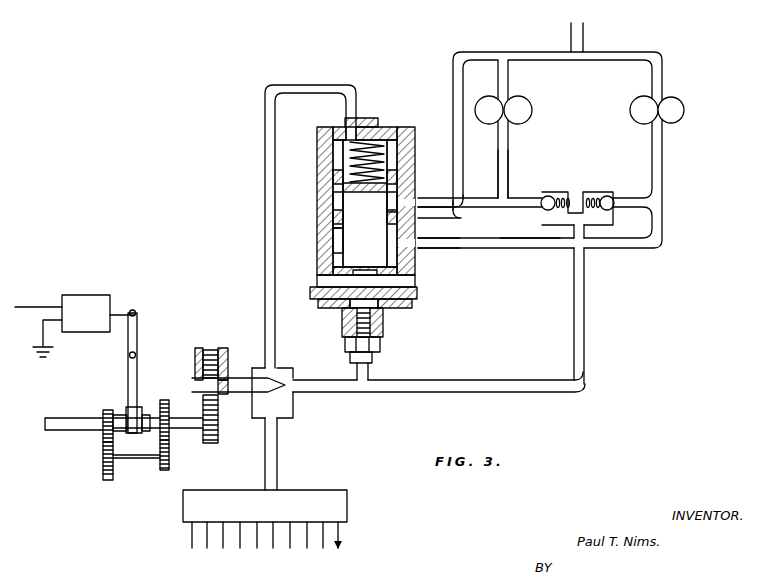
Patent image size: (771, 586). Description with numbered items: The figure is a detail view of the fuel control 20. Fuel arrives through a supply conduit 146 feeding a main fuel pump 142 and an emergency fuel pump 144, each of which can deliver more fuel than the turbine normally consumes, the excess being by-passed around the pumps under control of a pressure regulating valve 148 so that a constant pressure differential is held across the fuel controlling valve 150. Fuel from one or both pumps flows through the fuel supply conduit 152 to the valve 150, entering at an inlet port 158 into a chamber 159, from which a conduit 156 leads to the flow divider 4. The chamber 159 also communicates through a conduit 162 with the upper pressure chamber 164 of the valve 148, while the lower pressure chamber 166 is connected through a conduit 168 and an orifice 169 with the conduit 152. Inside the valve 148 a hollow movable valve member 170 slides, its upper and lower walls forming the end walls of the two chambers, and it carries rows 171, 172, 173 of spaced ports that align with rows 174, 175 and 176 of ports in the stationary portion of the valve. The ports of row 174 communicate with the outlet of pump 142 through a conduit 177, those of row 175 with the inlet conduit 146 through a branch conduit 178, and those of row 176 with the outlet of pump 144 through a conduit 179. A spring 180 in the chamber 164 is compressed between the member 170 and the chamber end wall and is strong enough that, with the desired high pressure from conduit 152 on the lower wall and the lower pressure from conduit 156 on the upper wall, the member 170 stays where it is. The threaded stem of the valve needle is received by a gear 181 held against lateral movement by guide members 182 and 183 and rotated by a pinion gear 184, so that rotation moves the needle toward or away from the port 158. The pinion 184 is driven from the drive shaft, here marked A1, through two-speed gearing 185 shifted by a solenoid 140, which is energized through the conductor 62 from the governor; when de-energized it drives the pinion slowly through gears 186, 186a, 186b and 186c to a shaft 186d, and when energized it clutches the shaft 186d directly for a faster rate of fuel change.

The fuel control 20 is at (666, 72).
The supply conduit 146 is at (573, 31).
The main fuel pump 142 is at (522, 111).
The emergency fuel pump 144 is at (640, 98).
The conduit 177 is at (493, 172).
The branch conduit 178 is at (456, 222).
The row of ports 174 is at (406, 190).
The conduit 179 is at (494, 247).
The row of ports 176 is at (416, 252).
The fuel supply conduit 152 is at (590, 298).
The conduit 162 is at (266, 222).
The upper pressure chamber 164 is at (338, 142).
The pressure regulating valve 148 is at (386, 127).
The spring 180 is at (358, 138).
The row of ports 171 is at (344, 198).
The row of ports 173 is at (386, 212).
The row of ports 172 is at (344, 225).
The row of ports 175 is at (344, 247).
The hollow movable valve member 170 is at (400, 273).
The lower pressure chamber 166 is at (350, 282).
The orifice 169 is at (385, 310).
The conduit 168 is at (371, 378).
The chamber 159 is at (296, 406).
The fuel controlling valve 150 is at (280, 363).
The inlet port 158 is at (290, 378).
The conduit 156 is at (279, 446).
The flow divider 4 is at (314, 498).
The solenoid 140 is at (88, 302).
The conductor 62 is at (33, 306).
The input shaft A1 is at (88, 418).
The gear 186 is at (103, 436).
The gear 186a is at (103, 465).
The gear 186b is at (170, 466).
The gear 186c is at (170, 445).
The shaft 186d is at (198, 418).
The two-speed gearing 185 is at (196, 376).
The pinion gear 184 is at (214, 442).
The guide member 182 is at (199, 350).
The guide member 183 is at (224, 348).
The gear 181 is at (230, 353).